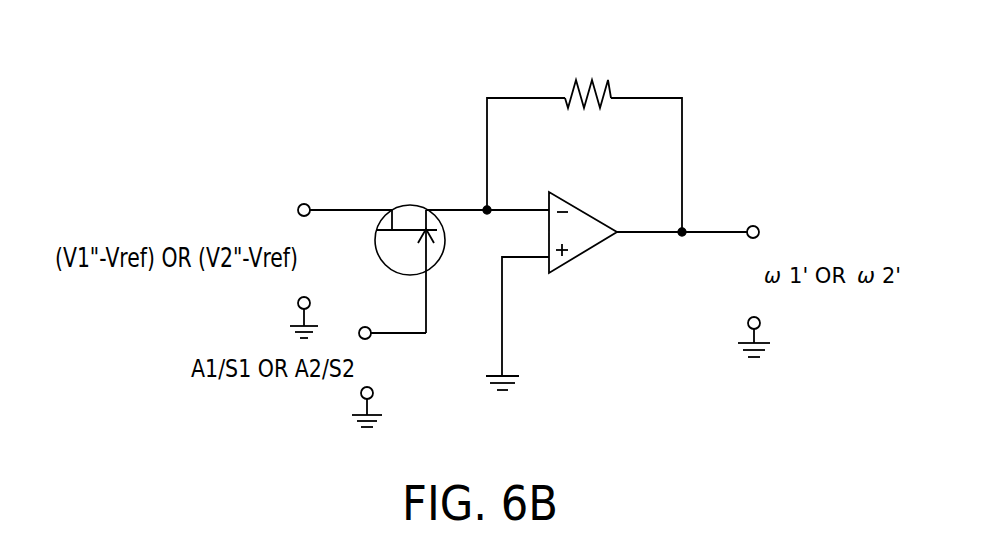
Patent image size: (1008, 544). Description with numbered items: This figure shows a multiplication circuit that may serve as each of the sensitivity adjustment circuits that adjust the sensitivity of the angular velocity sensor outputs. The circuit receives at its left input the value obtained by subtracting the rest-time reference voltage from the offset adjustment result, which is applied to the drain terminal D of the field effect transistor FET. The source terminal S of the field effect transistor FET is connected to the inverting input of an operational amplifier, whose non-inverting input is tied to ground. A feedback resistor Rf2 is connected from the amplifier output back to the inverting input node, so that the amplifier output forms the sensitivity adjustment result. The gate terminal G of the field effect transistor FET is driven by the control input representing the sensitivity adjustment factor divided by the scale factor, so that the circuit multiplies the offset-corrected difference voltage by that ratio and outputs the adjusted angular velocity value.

The field effect transistor FET is at (402, 256).
The feedback resistor Rf2 is at (584, 135).
The drain terminal D is at (377, 208).
The source terminal S is at (432, 208).
The gate terminal G is at (396, 284).